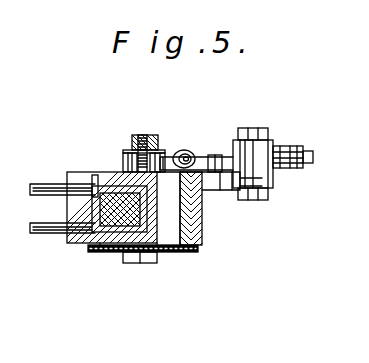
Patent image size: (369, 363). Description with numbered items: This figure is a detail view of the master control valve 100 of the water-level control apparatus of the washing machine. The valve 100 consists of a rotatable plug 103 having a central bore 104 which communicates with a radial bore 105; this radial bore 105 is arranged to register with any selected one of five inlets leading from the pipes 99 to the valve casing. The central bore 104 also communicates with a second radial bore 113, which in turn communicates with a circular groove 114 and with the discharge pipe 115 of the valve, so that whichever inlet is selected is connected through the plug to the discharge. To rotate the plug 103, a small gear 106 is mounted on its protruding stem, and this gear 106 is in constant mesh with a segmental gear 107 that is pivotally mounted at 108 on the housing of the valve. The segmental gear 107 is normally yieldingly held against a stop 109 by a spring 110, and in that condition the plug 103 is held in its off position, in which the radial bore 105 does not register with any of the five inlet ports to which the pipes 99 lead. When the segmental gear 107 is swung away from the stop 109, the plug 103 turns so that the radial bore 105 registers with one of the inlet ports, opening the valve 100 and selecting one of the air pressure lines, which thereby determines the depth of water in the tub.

The pipes 99 is at (43, 235).
The valve 100 is at (189, 253).
The rotatable plug 103 is at (198, 225).
The central bore 104 is at (129, 254).
The radial bore 105 is at (100, 250).
The small gear 106 is at (123, 171).
The segmental gear 107 is at (172, 157).
The pivot 108 is at (255, 132).
The stop 109 is at (218, 155).
The spring 110 is at (201, 188).
The radial bore 113 is at (114, 190).
The circular groove 114 is at (88, 186).
The discharge pipe 115 is at (43, 185).